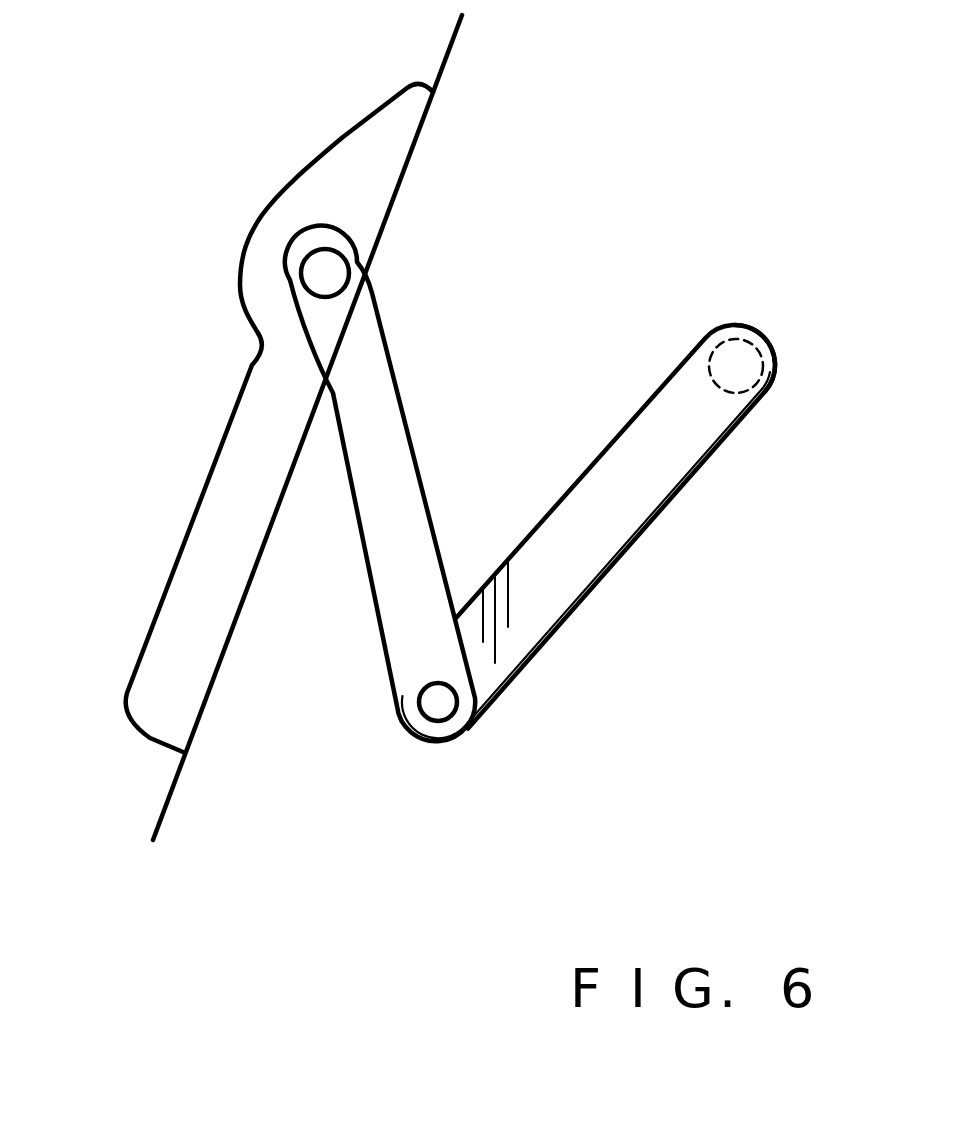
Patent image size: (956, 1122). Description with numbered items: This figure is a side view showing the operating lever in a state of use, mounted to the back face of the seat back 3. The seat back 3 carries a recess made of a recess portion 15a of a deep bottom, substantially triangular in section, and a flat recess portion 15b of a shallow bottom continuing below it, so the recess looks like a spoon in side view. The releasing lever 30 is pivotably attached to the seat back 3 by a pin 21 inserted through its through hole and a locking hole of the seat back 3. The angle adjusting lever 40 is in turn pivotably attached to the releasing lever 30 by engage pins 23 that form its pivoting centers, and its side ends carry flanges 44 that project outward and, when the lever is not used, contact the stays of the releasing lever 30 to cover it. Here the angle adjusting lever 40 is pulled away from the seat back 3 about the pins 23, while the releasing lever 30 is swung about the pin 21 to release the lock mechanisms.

The seat back 3 is at (148, 787).
The recess portion of a deep bottom 15a is at (350, 173).
The flat recess portion of a shallow bottom 15b is at (237, 478).
The pin 21 is at (328, 267).
The engage pin 23 is at (443, 703).
The releasing lever 30 is at (372, 383).
The angle adjusting lever 40 is at (598, 528).
The flange 44 is at (777, 380).